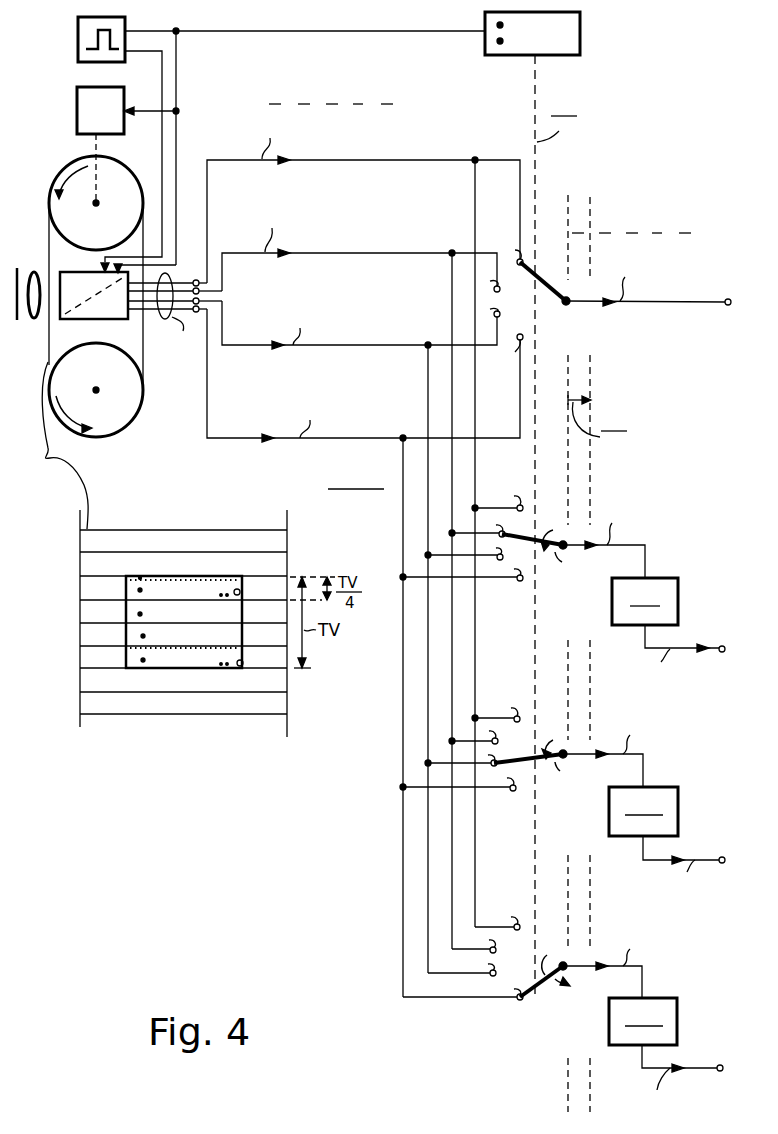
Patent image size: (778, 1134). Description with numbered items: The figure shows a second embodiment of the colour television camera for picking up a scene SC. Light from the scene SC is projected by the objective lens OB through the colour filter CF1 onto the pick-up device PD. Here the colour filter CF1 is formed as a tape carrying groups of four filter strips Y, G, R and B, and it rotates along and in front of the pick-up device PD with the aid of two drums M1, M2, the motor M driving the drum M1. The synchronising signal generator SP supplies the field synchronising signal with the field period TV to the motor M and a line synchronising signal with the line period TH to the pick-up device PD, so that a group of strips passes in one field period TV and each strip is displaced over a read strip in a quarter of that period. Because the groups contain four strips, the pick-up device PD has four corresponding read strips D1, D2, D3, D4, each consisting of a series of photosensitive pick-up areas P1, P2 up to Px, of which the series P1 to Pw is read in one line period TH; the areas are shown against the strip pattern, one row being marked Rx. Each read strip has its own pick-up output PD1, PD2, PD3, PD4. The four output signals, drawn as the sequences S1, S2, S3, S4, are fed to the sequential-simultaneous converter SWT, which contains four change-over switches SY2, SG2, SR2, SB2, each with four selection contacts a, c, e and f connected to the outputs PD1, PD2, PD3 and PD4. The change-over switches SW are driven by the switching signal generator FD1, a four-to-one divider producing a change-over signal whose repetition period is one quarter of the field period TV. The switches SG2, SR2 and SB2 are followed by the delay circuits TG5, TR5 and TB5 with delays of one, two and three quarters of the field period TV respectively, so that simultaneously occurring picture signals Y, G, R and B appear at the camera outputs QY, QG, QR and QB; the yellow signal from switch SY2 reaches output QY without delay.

The synchronising signal generator SP is at (78, 50).
The field period TV is at (177, 38).
The line period TH is at (162, 97).
The motor M is at (77, 112).
The drum M1 is at (80, 163).
The drum M2 is at (133, 410).
The scene SC is at (27, 283).
The objective lens OB is at (38, 318).
The pick-up device PD is at (121, 320).
The pick-up output PD1 is at (198, 279).
The pick-up output PD2 is at (206, 290).
The pick-up output PD3 is at (197, 305).
The pick-up output PD4 is at (198, 313).
The colour filter CF1 is at (59, 445).
The switching signal generator FD1 is at (518, 57).
The signal sequence 1 S1 is at (363, 506).
The signal sequence 2 S2 is at (359, 579).
The signal sequence 3 S3 is at (359, 637).
The signal sequence 4 S4 is at (363, 653).
The sequential-simultaneous converter SWT is at (356, 478).
The change-over switch SY2 is at (545, 293).
The camera output QY is at (728, 305).
The change-over switches SW is at (658, 401).
The change-over switch SG2 is at (492, 538).
The delay circuit TG5 is at (612, 622).
The camera output QG is at (723, 647).
The change-over switch SR2 is at (494, 748).
The delay circuit TR5 is at (609, 827).
The camera output QR is at (722, 858).
The change-over switch SB2 is at (498, 954).
The delay circuit TB5 is at (609, 1040).
The camera output QB is at (720, 1065).
The pick-up area Pw is at (239, 578).
The pick-up area P1 is at (132, 578).
The pick-up area P2 is at (141, 578).
The pick-up area Px is at (242, 665).
The row x Rx is at (246, 590).
The read strip D1 is at (139, 590).
The read strip D2 is at (139, 614).
The read strip D3 is at (142, 636).
The read strip D4 is at (143, 660).